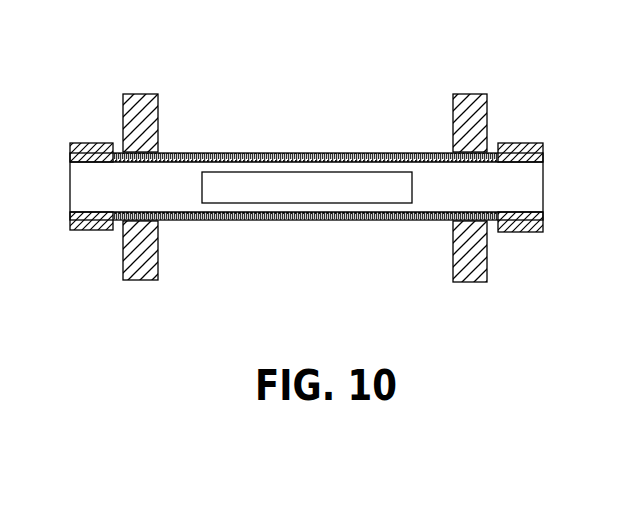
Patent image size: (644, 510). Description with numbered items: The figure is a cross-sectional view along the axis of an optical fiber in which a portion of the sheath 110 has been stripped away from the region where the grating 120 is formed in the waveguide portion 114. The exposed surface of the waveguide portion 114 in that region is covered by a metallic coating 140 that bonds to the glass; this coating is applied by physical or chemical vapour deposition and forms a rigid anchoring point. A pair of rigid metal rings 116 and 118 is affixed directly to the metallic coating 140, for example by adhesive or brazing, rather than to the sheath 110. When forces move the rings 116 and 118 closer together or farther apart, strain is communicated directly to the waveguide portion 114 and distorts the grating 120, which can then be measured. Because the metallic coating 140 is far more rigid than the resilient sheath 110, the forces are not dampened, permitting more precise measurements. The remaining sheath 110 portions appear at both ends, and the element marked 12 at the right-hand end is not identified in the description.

The optical fiber 12 is at (543, 224).
The sheath 110 is at (90, 222).
The waveguide portion 114 is at (527, 187).
The ring 116 is at (470, 105).
The ring 118 is at (139, 105).
The grating 120 is at (372, 183).
The metallic coating 140 is at (268, 153).